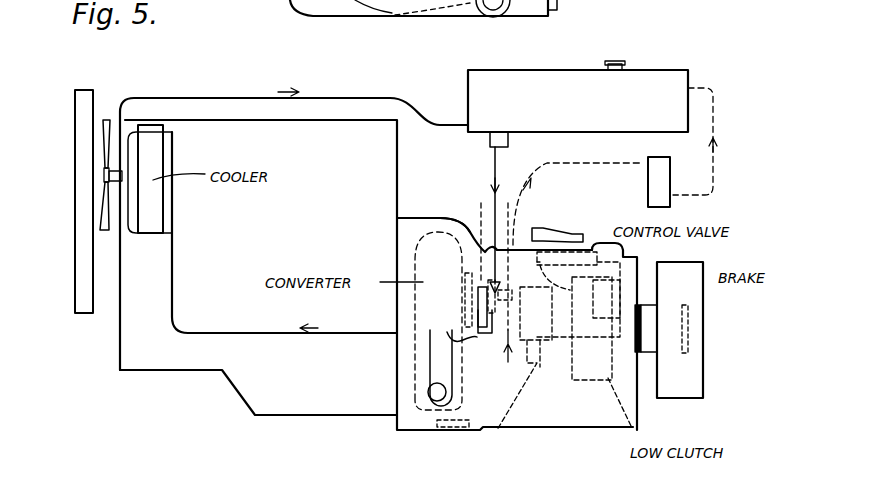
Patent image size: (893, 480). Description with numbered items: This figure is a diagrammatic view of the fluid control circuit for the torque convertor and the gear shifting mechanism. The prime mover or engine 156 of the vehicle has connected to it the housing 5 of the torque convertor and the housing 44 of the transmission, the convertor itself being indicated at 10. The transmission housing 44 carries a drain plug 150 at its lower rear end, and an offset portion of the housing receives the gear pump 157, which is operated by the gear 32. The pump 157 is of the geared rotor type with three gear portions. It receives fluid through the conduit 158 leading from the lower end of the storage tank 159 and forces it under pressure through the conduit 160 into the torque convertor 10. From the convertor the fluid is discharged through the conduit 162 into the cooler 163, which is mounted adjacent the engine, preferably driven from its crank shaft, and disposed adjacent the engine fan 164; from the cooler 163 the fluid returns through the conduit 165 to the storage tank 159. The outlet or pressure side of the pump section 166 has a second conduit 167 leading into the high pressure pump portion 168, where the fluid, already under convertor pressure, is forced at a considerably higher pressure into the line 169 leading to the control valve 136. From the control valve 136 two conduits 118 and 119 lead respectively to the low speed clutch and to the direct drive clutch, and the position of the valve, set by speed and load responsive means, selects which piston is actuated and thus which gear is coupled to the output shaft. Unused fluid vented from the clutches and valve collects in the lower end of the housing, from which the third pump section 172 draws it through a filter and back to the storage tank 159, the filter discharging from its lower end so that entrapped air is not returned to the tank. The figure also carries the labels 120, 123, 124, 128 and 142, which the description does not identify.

The torque convertor housing 5 is at (447, 217).
The torque convertor 10 is at (395, 252).
The gear 32 is at (438, 321).
The transmission housing 44 is at (608, 422).
The conduit 118 is at (602, 352).
The conduit 119 is at (718, 275).
The sump 120 is at (430, 435).
The valve 123 is at (648, 183).
The return line 124 is at (723, 128).
The brake band 128 is at (703, 345).
The control valve 136 is at (625, 247).
The control lever 142 is at (567, 228).
The drain plug 150 is at (493, 17).
The engine 156 is at (228, 365).
The gear pump 157 is at (538, 270).
The conduit 158 is at (497, 172).
The storage tank 159 is at (468, 80).
The conduit 160 is at (478, 327).
The conduit 162 is at (328, 340).
The cooler 163 is at (147, 233).
The engine fan 164 is at (110, 118).
The conduit 165 is at (217, 98).
The pump section 166 is at (479, 241).
The second conduit 167 is at (476, 349).
The high pressure pump portion 168 is at (478, 297).
The line 169 is at (578, 204).
The third pump section 172 is at (503, 310).